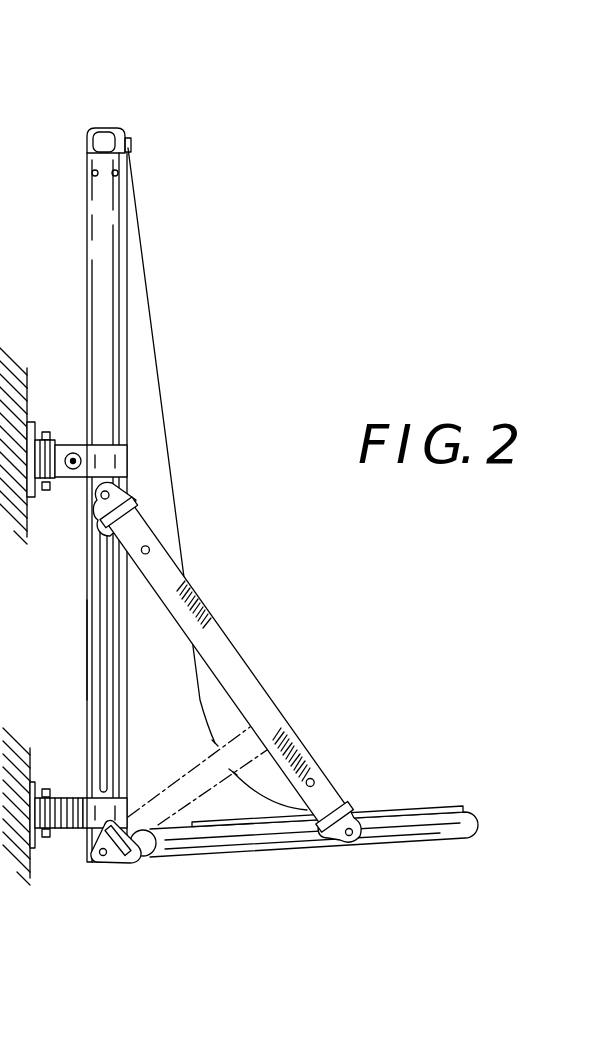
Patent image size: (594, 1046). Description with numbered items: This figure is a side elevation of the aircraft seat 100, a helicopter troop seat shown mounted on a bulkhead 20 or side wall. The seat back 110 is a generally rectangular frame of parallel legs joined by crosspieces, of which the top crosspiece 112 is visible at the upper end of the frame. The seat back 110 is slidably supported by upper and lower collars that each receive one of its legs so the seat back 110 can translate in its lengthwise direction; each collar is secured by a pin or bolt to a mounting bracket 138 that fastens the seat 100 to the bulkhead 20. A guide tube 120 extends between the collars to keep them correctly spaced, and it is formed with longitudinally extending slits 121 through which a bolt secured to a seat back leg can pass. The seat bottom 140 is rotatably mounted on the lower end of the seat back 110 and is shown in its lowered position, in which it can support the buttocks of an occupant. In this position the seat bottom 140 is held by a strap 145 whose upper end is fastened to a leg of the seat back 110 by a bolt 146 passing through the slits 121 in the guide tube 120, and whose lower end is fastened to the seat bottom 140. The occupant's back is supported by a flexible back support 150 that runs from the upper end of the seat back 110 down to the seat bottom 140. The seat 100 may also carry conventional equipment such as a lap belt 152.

The bulkhead 20 is at (27, 537).
The aircraft seat 100 is at (185, 248).
The seat back 110 is at (88, 208).
The top crosspiece 112 is at (103, 128).
The guide tube 120 is at (88, 643).
The slit 121 is at (97, 693).
The mounting bracket 138 is at (45, 440).
The seat bottom 140 is at (477, 840).
The strap 145 is at (250, 668).
The bolt 146 is at (130, 484).
The flexible back support 150 is at (160, 413).
The lap belt 152 is at (200, 781).